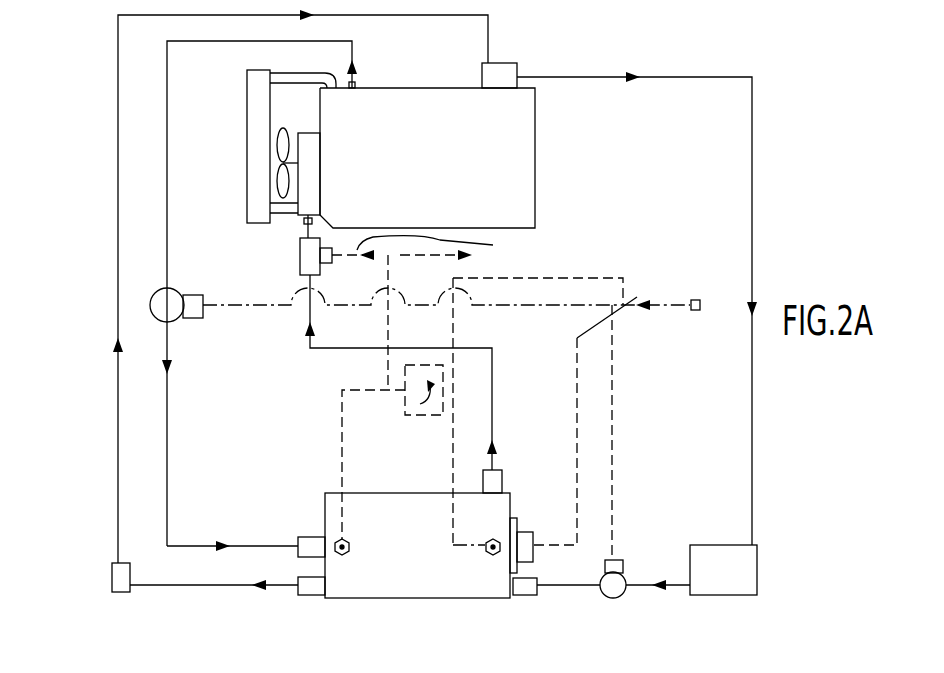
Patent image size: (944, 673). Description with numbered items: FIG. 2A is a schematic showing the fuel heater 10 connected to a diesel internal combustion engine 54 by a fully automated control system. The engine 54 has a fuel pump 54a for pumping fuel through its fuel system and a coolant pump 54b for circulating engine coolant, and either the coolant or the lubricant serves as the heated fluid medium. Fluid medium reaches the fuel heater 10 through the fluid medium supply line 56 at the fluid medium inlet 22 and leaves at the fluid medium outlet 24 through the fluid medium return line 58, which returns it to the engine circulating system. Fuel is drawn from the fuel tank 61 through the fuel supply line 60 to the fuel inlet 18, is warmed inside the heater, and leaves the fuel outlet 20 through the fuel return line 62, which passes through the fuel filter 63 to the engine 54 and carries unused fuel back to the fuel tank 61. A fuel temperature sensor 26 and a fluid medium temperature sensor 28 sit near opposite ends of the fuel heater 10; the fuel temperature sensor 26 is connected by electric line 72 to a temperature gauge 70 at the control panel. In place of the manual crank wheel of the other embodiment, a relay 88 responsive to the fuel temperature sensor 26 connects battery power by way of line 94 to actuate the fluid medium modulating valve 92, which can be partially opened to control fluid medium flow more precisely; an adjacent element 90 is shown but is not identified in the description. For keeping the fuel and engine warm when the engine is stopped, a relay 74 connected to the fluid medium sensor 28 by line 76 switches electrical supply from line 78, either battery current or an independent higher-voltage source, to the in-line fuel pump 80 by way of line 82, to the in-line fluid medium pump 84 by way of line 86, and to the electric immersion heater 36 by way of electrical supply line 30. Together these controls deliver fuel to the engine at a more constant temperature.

The fuel heater 10 is at (381, 503).
The fuel inlet 18 is at (532, 621).
The fuel outlet 20 is at (305, 617).
The fluid medium inlet 22 is at (282, 522).
The fluid medium outlet 24 is at (518, 451).
The fuel temperature sensor 26 is at (368, 594).
The fluid medium temperature sensor 28 is at (475, 595).
The electrical supply line 30 is at (547, 441).
The electric immersion heater 36 is at (538, 517).
The internal combustion engine 54 is at (464, 158).
The fuel pump 54a is at (536, 44).
The coolant pump 54b is at (258, 149).
The fluid medium supply line 56 is at (259, 296).
The fluid medium return line 58 is at (422, 372).
The fuel supply line 60 is at (613, 626).
The fuel tank 61 is at (757, 561).
The fuel return line 62 is at (391, 333).
The fuel filter 63 is at (82, 554).
The temperature gauge 70 is at (371, 384).
The electric line 72 is at (320, 446).
The relay 74 is at (627, 337).
The line 76 is at (443, 411).
The line 78 is at (579, 264).
The in-line fuel pump 80 is at (633, 542).
The line 82 is at (648, 432).
The in-line fluid medium pump 84 is at (204, 324).
The line 86 is at (451, 319).
The relay 88 is at (360, 320).
The valve control signal 90 is at (431, 274).
The fluid medium modulating valve 92 is at (283, 250).
The line 94 is at (438, 246).